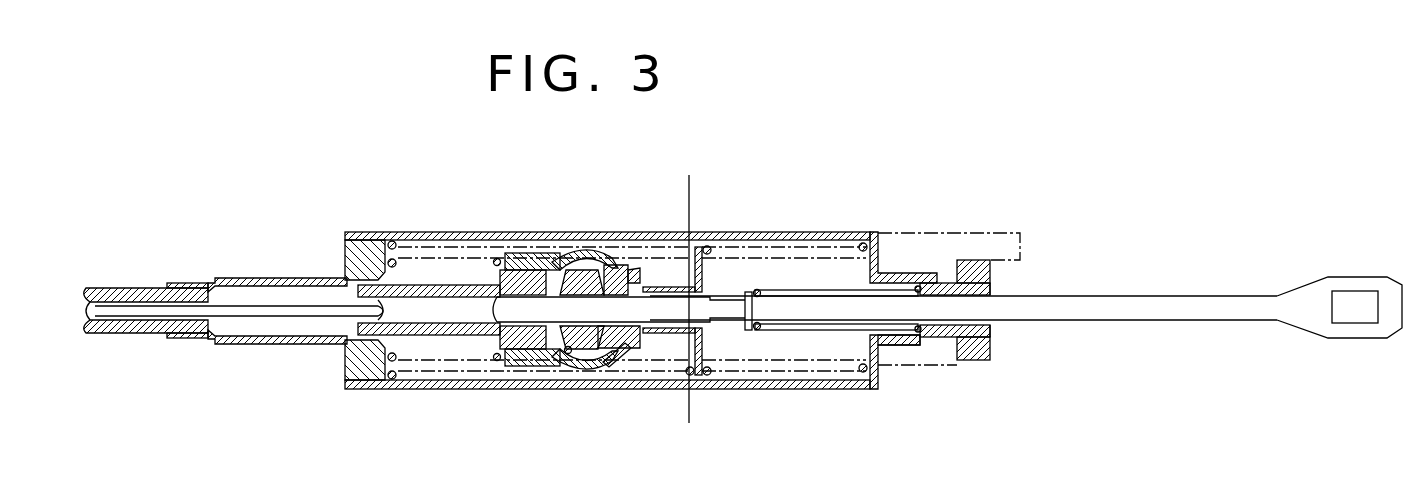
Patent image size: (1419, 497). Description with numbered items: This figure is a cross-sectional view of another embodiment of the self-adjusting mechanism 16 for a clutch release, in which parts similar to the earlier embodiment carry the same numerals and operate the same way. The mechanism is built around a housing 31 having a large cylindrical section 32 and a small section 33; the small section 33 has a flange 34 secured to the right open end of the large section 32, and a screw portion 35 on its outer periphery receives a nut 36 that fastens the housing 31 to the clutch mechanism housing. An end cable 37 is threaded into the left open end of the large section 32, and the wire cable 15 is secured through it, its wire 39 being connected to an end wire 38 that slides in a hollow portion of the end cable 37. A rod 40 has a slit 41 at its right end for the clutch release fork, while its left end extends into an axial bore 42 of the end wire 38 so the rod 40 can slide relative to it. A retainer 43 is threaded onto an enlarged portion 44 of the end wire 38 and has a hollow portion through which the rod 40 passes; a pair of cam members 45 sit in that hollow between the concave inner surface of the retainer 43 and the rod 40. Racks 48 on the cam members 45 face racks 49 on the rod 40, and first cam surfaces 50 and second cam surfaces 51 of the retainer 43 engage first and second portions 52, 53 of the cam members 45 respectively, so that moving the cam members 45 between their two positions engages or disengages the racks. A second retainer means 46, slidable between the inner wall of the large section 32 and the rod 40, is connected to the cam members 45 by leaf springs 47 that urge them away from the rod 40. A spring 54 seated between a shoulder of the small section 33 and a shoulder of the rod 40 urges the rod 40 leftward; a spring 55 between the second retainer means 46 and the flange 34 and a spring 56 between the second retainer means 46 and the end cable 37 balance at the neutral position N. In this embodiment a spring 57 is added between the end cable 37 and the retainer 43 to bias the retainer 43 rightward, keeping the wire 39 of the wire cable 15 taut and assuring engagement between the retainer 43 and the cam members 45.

The wire cable 15 is at (127, 335).
The self-adjusting mechanism 16 is at (607, 300).
The housing 31 is at (768, 237).
The large cylindrical section 32 is at (458, 389).
The small section 33 is at (943, 338).
The flange 34 is at (878, 374).
The screw portion 35 is at (990, 335).
The nut 36 is at (977, 360).
The end cable 37 is at (312, 277).
The end wire 38 is at (412, 340).
The wire 39 is at (248, 313).
The rod 40 is at (778, 315).
The slit 41 is at (1348, 297).
The axial bore 42 is at (440, 322).
The retainer 43 is at (515, 348).
The enlarged portion 44 is at (486, 262).
The cam members 45 is at (597, 263).
The second retainer means 46 is at (705, 354).
The leaf springs 47 is at (672, 288).
The racks 48 is at (618, 268).
The racks 49 is at (530, 258).
The first cam surfaces 50 is at (560, 262).
The second cam surfaces 51 is at (632, 265).
The first portions 52 is at (578, 265).
The second portions 53 is at (620, 268).
The spring 54 is at (925, 345).
The spring 55 is at (862, 236).
The spring 56 is at (392, 243).
The spring 57 is at (407, 247).
The neutral position N is at (689, 285).